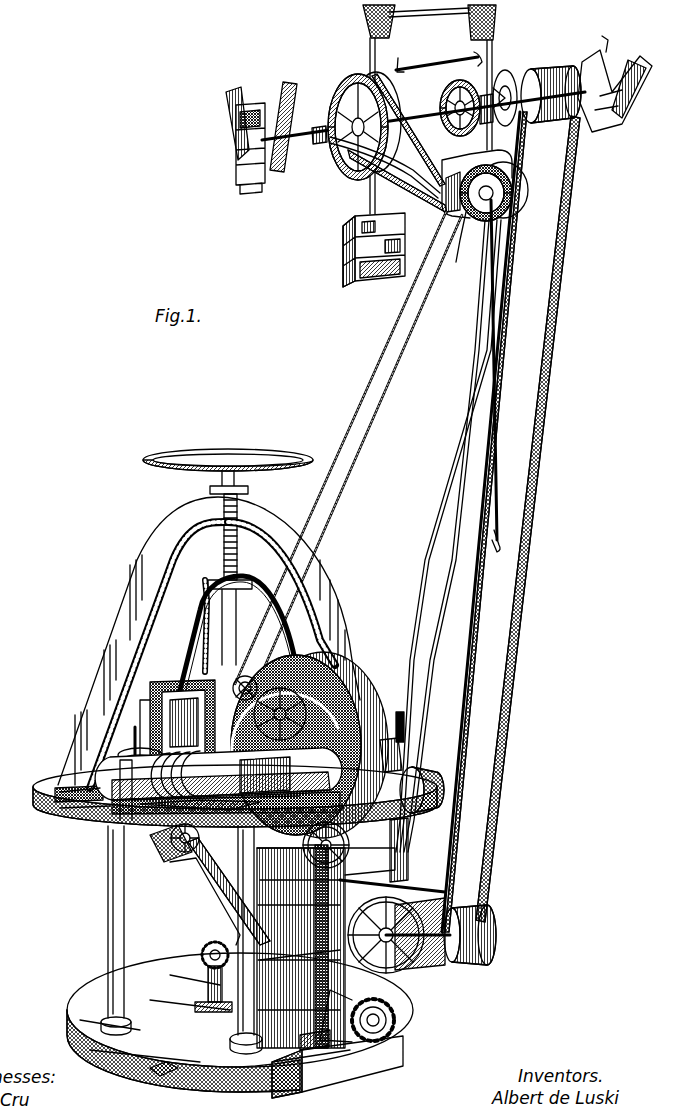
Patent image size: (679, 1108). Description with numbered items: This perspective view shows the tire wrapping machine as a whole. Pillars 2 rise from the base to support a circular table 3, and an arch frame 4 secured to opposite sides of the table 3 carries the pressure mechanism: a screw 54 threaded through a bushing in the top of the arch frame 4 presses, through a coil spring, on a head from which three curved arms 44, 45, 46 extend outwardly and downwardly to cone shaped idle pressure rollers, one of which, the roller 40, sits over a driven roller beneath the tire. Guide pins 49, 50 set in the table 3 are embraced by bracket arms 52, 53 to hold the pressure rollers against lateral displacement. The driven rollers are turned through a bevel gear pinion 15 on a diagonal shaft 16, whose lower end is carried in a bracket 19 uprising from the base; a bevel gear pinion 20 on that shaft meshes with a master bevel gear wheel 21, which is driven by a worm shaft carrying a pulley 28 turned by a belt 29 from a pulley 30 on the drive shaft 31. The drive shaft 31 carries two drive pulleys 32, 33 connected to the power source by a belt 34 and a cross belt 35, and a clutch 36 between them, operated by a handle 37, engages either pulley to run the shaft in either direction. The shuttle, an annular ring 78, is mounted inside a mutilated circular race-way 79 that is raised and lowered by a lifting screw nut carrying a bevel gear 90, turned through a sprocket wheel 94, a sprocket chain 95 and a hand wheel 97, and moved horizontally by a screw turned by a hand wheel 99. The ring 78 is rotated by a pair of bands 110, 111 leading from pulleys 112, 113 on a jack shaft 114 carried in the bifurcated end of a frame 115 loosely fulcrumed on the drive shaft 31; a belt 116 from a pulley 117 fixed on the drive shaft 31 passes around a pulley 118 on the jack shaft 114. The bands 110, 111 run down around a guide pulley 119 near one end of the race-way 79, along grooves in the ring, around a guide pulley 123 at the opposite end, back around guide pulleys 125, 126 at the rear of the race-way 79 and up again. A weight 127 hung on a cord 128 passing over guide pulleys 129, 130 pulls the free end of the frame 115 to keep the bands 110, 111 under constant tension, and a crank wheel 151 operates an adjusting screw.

The pillars 2 is at (108, 894).
The table 3 is at (54, 814).
The arch frame 4 is at (150, 547).
The bevel gear pinion 15 is at (180, 850).
The diagonal shaft 16 is at (203, 952).
The bracket 19 is at (216, 1012).
The bevel gear pinion 20 is at (206, 985).
The master bevel gear wheel 21 is at (252, 885).
The pulley 28 is at (480, 928).
The belt 29 is at (514, 679).
The pulley 30 is at (560, 68).
The drive shaft 31 is at (534, 70).
The drive pulley 32 is at (506, 70).
The drive pulley 33 is at (450, 93).
The belt 34 is at (470, 48).
The cross belt 35 is at (396, 68).
The clutch 36 is at (472, 58).
The handle 37 is at (500, 480).
The cone shaped idle pulley 40 is at (118, 832).
The curved arm 44 is at (188, 601).
The curved arm 45 is at (300, 603).
The curved arm 46 is at (190, 638).
The guide pin 49 is at (406, 728).
The guide pin 50 is at (133, 736).
The bracket arm 52 is at (414, 744).
The bracket arm 53 is at (118, 752).
The screw 54 is at (226, 553).
The annular ring 78 is at (378, 699).
The race-way 79 is at (364, 686).
The bevel gear 90 is at (314, 1040).
The sprocket wheel 94 is at (396, 1027).
The sprocket chain 95 is at (392, 1042).
The hand wheel 97 is at (398, 834).
The hand wheel 99 is at (432, 984).
The band 110 is at (366, 376).
The band 111 is at (395, 381).
The pulley 112 is at (466, 250).
The pulley 113 is at (522, 180).
The jack shaft 114 is at (456, 212).
The frame 115 is at (384, 172).
The belt 116 is at (395, 188).
The pulley 117 is at (336, 100).
The pulley 118 is at (512, 200).
The guide pulley 119 is at (250, 675).
The guide pulley 123 is at (250, 892).
The guide pulley 125 is at (406, 861).
The guide pulley 126 is at (400, 882).
The weight 127 is at (343, 249).
The cord 128 is at (370, 60).
The guide pulley 129 is at (371, 24).
The guide pulley 130 is at (490, 32).
The crank wheel 151 is at (190, 862).